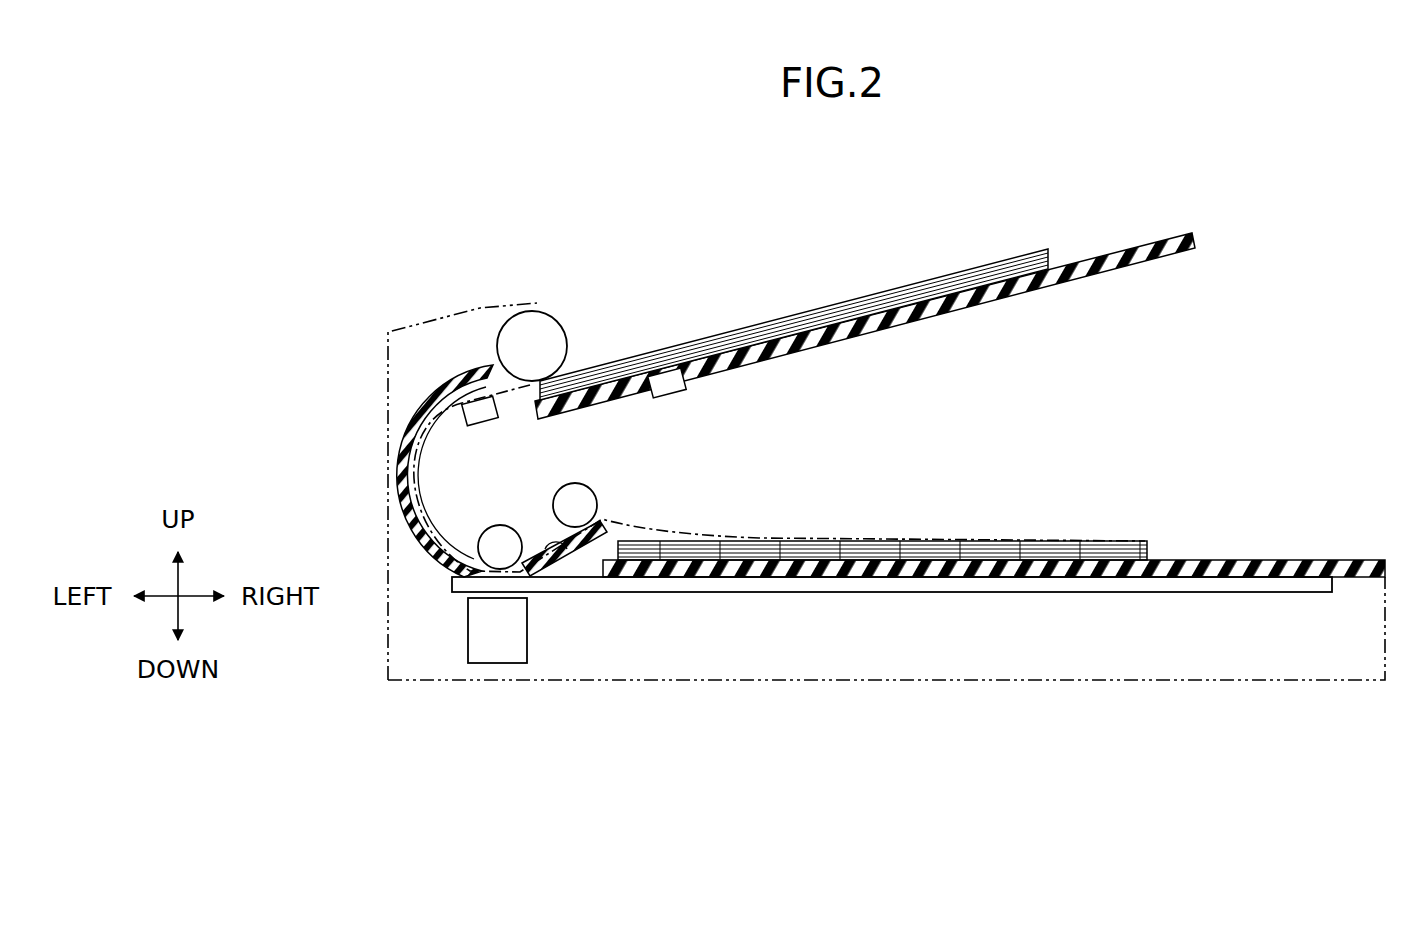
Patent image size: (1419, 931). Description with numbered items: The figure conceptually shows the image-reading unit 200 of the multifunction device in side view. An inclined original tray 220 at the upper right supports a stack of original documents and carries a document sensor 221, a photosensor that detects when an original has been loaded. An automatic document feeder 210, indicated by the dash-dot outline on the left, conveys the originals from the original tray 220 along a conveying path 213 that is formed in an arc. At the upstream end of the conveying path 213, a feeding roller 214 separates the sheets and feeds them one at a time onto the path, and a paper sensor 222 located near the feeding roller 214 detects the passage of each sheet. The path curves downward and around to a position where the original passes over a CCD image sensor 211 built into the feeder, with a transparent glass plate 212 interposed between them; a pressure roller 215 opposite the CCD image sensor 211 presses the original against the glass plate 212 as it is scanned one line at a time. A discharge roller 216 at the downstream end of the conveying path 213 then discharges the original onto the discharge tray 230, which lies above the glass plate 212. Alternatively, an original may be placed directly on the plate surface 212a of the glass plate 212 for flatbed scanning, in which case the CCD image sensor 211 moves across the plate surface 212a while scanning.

The image-reading unit 200 is at (1166, 162).
The automatic document feeder 210 is at (429, 292).
The CCD image sensor 211 is at (497, 648).
The glass plate 212 is at (1233, 588).
The plate surface 212a is at (1300, 572).
The conveying path 213 is at (412, 508).
The feeding roller 214 is at (550, 333).
The pressure roller 215 is at (498, 534).
The discharge roller 216 is at (583, 496).
The original tray 220 is at (1067, 277).
The document sensor 221 is at (670, 386).
The paper sensor 222 is at (483, 416).
The discharge tray 230 is at (1195, 571).